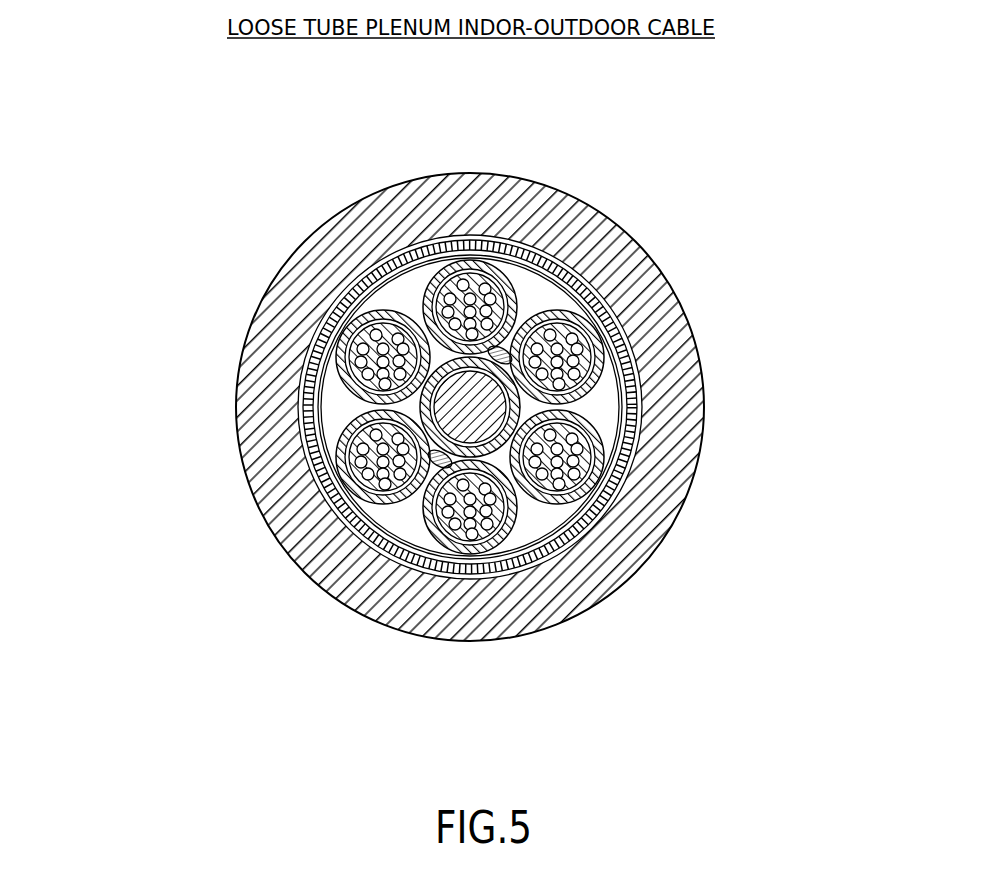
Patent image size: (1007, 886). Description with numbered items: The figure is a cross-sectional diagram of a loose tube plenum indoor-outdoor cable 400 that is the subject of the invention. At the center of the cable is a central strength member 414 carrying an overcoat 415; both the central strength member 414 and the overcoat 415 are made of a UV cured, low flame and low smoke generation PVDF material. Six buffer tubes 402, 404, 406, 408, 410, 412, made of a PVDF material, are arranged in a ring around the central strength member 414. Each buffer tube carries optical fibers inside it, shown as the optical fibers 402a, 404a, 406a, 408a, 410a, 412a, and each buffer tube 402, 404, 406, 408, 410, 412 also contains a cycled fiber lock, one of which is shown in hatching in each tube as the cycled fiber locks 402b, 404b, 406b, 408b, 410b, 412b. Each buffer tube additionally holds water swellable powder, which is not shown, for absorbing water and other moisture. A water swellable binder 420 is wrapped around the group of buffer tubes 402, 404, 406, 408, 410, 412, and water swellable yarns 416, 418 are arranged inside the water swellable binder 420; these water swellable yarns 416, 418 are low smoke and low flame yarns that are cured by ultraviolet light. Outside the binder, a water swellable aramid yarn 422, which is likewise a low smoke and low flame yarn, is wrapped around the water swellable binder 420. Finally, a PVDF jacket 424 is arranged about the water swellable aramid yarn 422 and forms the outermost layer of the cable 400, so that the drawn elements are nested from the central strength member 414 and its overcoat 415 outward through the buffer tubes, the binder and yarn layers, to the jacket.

The loose tube plenum indoor-outdoor cable 400 is at (247, 130).
The buffer tube 402 is at (600, 335).
The optical fibers 402a is at (585, 377).
The cycled fiber lock 402b is at (590, 393).
The buffer tube 404 is at (603, 455).
The optical fibers 404a is at (585, 490).
The cycled fiber lock 404b is at (575, 492).
The buffer tube 406 is at (522, 545).
The optical fibers 406a is at (486, 545).
The cycled fiber lock 406b is at (447, 520).
The buffer tube 408 is at (360, 497).
The optical fibers 408a is at (345, 475).
The cycled fiber lock 408b is at (345, 465).
The buffer tube 410 is at (350, 320).
The optical fibers 410a is at (342, 382).
The cycled fiber lock 410b is at (345, 362).
The buffer tube 412 is at (487, 267).
The optical fibers 412a is at (440, 272).
The cycled fiber lock 412b is at (448, 275).
The central strength member 414 is at (737, 743).
The overcoat 415 is at (427, 290).
The water swellable yarn 416 is at (432, 445).
The water swellable yarn 418 is at (577, 277).
The water swellable binder 420 is at (322, 410).
The water swellable aramid yarn 422 is at (600, 708).
The PVDF jacket 424 is at (306, 243).